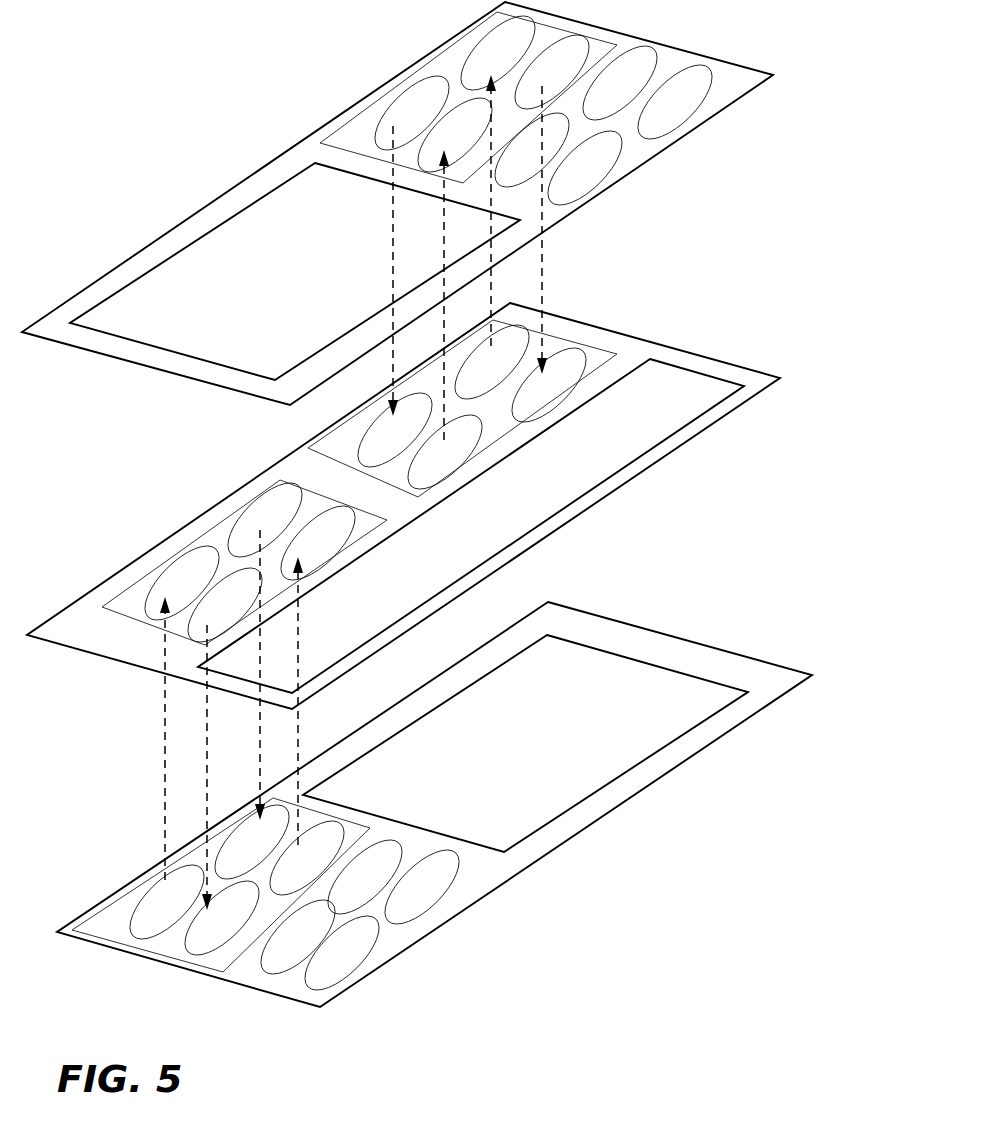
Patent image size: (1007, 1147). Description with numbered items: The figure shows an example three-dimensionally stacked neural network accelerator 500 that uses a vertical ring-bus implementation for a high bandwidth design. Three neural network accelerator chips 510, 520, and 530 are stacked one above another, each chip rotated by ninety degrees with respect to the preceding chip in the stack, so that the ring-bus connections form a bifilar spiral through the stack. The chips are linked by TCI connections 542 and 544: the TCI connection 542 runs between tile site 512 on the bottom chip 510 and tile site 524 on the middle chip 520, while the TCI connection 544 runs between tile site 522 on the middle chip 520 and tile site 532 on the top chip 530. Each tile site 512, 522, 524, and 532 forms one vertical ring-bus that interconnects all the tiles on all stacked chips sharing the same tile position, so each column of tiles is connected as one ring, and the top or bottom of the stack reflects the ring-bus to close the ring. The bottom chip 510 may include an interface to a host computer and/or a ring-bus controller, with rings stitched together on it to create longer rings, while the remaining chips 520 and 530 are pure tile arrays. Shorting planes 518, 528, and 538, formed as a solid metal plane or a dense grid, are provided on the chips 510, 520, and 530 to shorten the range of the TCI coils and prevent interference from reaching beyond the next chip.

The stacked antenna assembly 500 is at (127, 33).
The neural network accelerator chip 510 is at (745, 813).
The tile site 512 is at (74, 909).
The shorting plane 518 is at (656, 664).
The neural network accelerator chip 520 is at (739, 455).
The tile site 522 is at (576, 328).
The tile site 524 is at (84, 578).
The shorting plane 528 is at (532, 504).
The neural network accelerator chip 530 is at (740, 132).
The tile site 532 is at (422, 60).
The shorting plane 538 is at (218, 288).
The TCI connection 542 is at (135, 758).
The TCI connection 544 is at (568, 260).